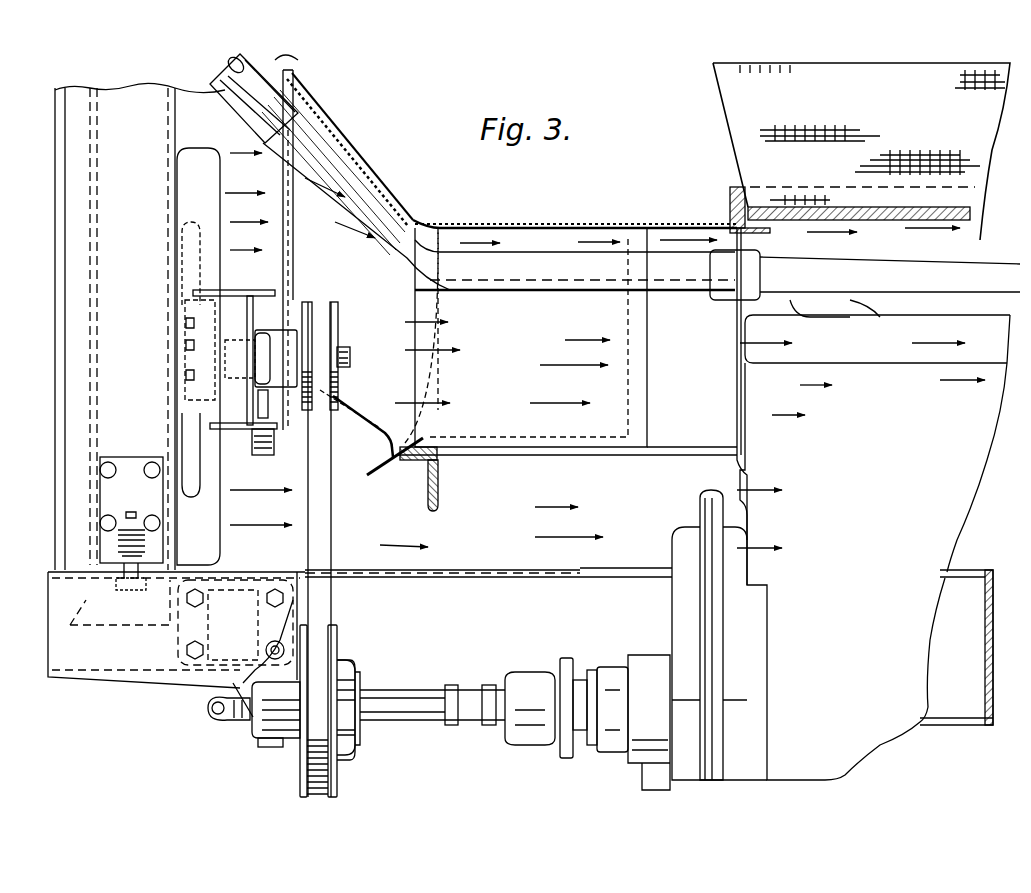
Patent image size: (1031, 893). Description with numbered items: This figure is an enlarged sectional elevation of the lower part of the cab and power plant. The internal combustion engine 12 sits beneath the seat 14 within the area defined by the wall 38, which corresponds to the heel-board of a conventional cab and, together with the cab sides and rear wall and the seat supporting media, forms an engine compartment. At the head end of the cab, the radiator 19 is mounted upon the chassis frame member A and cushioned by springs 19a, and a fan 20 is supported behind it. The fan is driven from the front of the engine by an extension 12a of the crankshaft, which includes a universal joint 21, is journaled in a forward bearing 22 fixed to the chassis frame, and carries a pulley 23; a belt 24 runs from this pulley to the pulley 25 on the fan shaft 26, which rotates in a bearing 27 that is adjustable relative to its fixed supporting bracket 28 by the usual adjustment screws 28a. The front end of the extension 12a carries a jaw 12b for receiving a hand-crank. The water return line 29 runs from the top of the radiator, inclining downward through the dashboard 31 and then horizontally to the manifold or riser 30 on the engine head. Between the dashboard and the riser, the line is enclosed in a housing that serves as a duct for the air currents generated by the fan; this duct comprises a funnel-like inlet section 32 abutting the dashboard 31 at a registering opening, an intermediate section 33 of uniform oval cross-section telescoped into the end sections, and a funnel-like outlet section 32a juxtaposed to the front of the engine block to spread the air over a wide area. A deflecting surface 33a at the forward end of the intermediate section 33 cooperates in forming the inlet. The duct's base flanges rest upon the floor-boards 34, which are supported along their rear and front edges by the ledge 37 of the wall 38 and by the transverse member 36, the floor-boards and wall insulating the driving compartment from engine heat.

The internal combustion engine 12 is at (795, 547).
The extension of the engine crank-shaft 12a is at (400, 720).
The jaw 12b is at (212, 715).
The seat 14 is at (861, 151).
The radiator 19 is at (110, 395).
The springs 19a is at (120, 540).
The fan 20 is at (205, 510).
The universal joint 21 is at (535, 745).
The forward bearing 22 is at (275, 748).
The pulley 23 is at (335, 788).
The belt 24 is at (325, 488).
The pulley 25 is at (338, 400).
The fan shaft 26 is at (352, 354).
The bearing 27 is at (272, 330).
The supporting bracket 28 is at (225, 292).
The adjustment screws 28a is at (270, 455).
The water return line 29 is at (330, 165).
The manifold or riser 30 is at (880, 262).
The dashboard 31 is at (283, 245).
The inlet end section of duct 32 is at (360, 172).
The outlet end section of duct 32a is at (697, 226).
The intermediate section of duct 33 is at (465, 226).
The deflecting surface 33a is at (392, 458).
The floor-boards 34 is at (555, 455).
The transverse member 36 is at (440, 488).
The ledge 37 is at (713, 462).
The wall 38 is at (737, 322).
The chassis frame member A is at (455, 577).